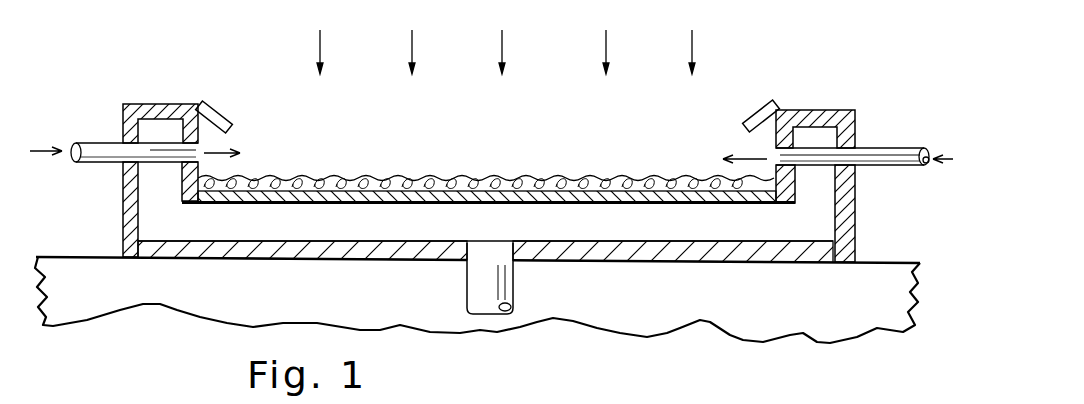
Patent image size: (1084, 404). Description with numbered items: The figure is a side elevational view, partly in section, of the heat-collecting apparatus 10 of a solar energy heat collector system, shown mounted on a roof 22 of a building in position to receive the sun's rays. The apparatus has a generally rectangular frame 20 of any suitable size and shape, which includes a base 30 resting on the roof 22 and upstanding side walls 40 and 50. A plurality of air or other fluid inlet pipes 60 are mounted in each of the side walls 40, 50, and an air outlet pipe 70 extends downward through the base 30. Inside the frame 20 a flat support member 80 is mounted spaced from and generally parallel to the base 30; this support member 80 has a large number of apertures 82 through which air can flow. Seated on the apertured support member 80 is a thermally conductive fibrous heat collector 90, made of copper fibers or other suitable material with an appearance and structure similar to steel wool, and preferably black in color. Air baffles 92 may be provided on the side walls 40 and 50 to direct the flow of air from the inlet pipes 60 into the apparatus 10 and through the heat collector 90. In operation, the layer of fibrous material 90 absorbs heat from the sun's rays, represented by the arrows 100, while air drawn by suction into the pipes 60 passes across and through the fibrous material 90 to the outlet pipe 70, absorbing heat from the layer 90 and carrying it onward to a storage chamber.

The heat-collecting apparatus 10 is at (158, 54).
The frame 20 is at (190, 257).
The roof 22 is at (88, 256).
The base 30 is at (792, 250).
The side wall 40 is at (128, 183).
The side wall 50 is at (843, 220).
The fluid inlet pipes 60 is at (98, 150).
The air outlet pipe 70 is at (493, 281).
The flat support member 80 is at (397, 199).
The apertures 82 is at (262, 197).
The fibrous heat collector 90 is at (578, 181).
The air baffles 92 is at (211, 118).
The sun's rays 100 is at (502, 46).